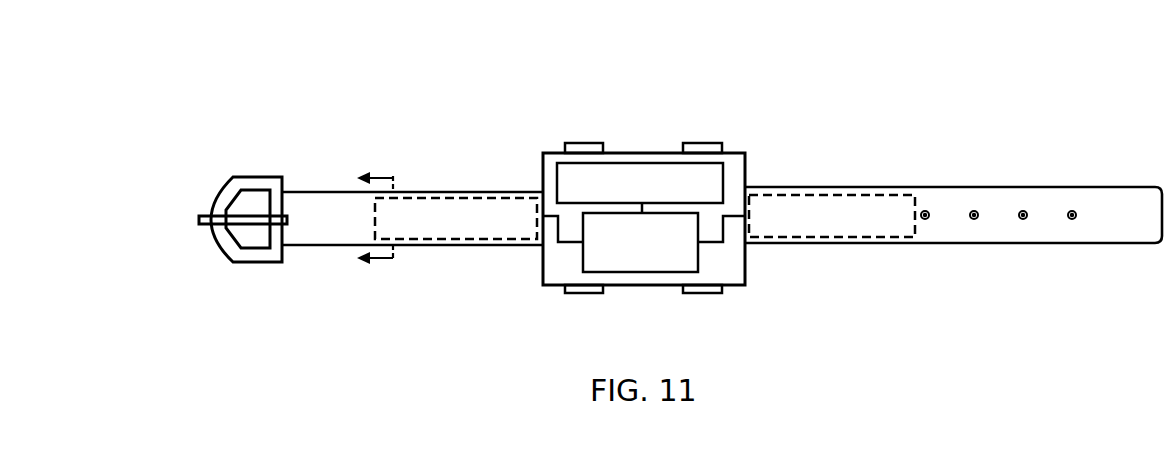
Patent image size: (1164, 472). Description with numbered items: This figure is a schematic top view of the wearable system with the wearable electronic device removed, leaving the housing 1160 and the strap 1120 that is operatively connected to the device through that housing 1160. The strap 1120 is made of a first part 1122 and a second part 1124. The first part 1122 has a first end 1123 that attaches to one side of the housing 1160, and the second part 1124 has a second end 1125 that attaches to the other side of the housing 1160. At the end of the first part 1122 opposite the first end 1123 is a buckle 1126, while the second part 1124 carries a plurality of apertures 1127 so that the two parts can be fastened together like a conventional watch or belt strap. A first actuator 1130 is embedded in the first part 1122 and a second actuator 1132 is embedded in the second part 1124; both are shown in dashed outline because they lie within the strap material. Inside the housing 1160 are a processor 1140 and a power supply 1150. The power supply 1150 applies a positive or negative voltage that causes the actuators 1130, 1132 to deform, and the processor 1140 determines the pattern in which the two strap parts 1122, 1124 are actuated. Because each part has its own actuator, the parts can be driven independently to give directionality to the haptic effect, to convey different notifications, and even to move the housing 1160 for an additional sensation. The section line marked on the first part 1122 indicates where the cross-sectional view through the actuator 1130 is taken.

The strap 1120 is at (1044, 133).
The first part 1122 is at (312, 190).
The first end 1123 is at (538, 183).
The second part 1124 is at (905, 187).
The second end 1125 is at (757, 173).
The buckle 1126 is at (222, 188).
The apertures 1127 is at (925, 220).
The first actuator 1130 is at (507, 240).
The second actuator 1132 is at (808, 238).
The processor 1140 is at (634, 163).
The power supply 1150 is at (633, 272).
The housing 1160 is at (549, 152).